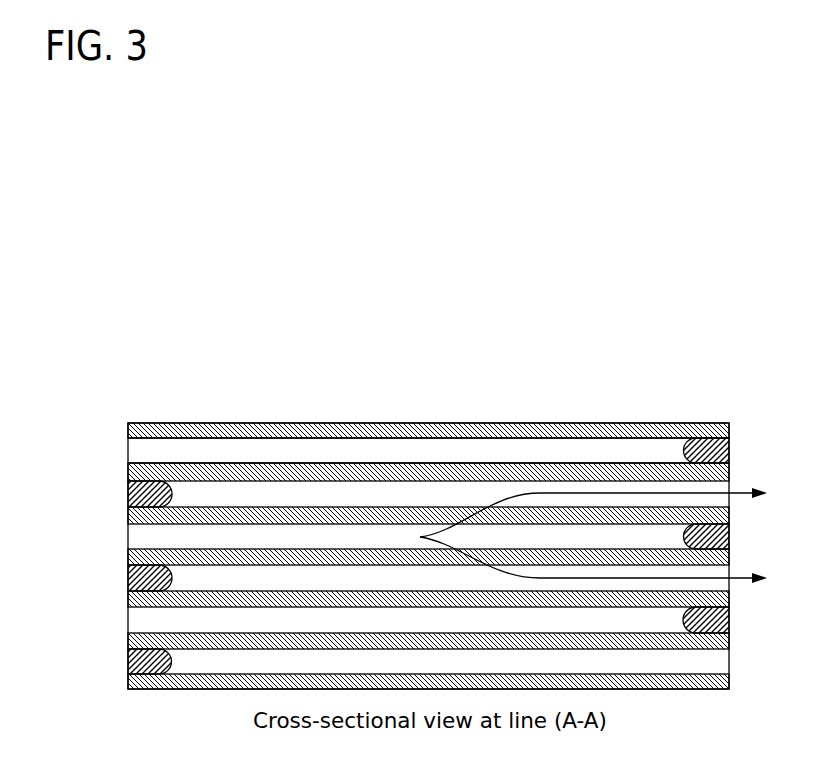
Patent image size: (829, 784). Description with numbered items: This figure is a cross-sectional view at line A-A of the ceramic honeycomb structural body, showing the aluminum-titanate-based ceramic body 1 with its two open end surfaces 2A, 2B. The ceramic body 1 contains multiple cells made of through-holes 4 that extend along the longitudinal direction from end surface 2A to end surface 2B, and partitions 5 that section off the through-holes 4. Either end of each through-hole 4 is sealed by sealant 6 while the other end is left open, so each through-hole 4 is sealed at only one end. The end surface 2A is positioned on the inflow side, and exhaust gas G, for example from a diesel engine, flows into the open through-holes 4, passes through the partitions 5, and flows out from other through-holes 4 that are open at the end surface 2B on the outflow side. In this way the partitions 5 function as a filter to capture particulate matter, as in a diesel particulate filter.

The ceramic body 1 is at (192, 382).
The through-holes 4 is at (138, 458).
The partitions 5 is at (303, 463).
The sealant 6 is at (733, 452).
The end surface 2A is at (125, 655).
The end surface 2B is at (731, 619).
The exhaust gas G is at (420, 537).